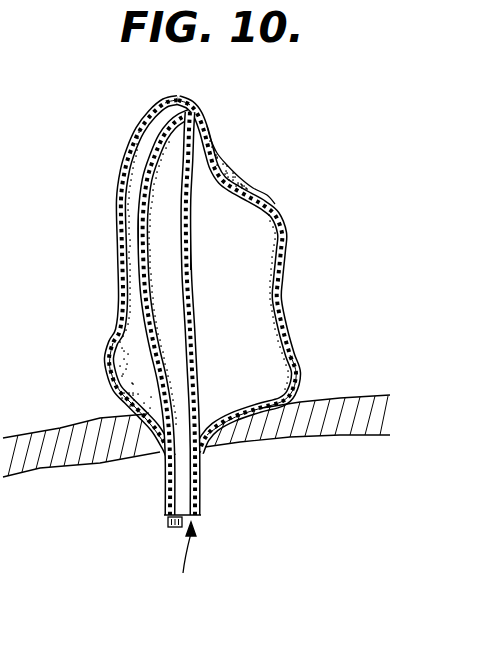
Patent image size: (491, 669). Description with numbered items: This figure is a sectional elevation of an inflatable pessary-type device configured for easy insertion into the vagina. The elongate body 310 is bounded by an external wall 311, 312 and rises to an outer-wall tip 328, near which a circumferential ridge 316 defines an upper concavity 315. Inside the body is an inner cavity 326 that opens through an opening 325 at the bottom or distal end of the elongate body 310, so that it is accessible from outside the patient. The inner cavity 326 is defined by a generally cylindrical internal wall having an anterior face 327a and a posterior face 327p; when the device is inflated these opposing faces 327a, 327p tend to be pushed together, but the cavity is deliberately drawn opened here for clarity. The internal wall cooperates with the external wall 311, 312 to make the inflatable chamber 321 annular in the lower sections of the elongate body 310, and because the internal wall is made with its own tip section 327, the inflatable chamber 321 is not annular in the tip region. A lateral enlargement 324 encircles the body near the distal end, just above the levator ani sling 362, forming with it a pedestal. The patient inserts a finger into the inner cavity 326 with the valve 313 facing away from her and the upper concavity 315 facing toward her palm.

The elongate body 310 is at (95, 173).
The external wall 311 is at (280, 281).
The external wall 312 is at (117, 268).
The valve 313 is at (169, 528).
The upper concavity 315 is at (233, 170).
The circumferential ridge 316 is at (250, 192).
The inflatable chamber 321 is at (72, 405).
The lateral enlargement 324 is at (105, 364).
The opening 325 is at (195, 564).
The inner cavity 326 is at (157, 287).
The tip section of internal wall 327 is at (197, 112).
The anterior face 327a is at (184, 250).
The posterior face 327p is at (138, 230).
The outer-wall tip 328 is at (182, 104).
The levator ani sling 362 is at (50, 462).